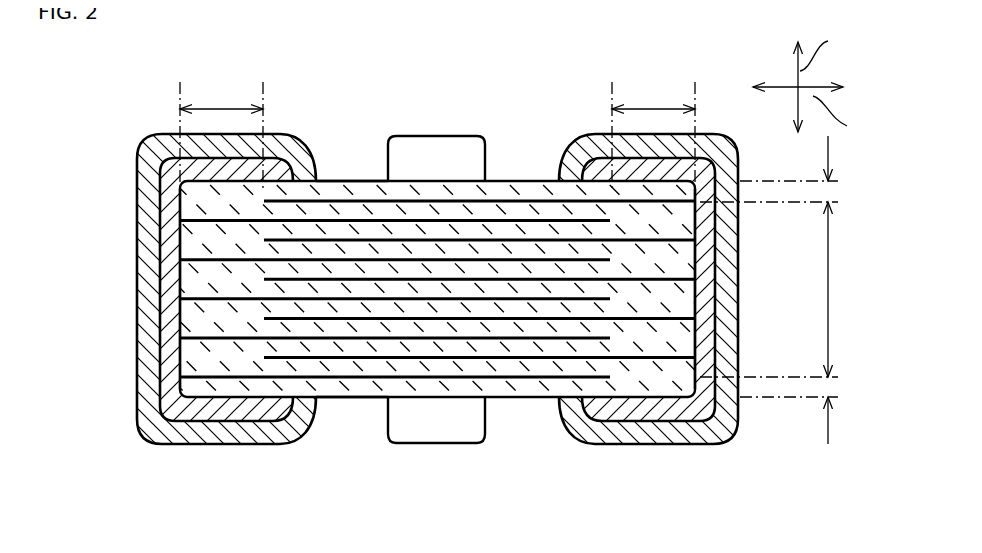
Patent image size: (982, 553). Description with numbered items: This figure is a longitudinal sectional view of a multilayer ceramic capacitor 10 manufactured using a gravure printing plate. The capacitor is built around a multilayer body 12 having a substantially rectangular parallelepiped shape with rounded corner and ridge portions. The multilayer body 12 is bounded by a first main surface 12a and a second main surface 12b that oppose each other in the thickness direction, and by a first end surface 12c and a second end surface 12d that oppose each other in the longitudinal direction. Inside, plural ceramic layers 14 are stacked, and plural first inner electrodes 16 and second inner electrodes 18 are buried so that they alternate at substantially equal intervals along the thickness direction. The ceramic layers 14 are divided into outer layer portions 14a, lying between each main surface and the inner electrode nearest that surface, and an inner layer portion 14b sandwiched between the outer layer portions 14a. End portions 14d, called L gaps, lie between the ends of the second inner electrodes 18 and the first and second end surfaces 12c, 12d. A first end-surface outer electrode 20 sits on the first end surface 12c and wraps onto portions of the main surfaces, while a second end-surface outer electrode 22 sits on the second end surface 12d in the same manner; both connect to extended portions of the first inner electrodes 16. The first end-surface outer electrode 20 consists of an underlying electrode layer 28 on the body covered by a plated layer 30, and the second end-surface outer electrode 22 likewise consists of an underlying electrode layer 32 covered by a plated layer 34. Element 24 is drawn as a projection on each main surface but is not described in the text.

The multilayer ceramic capacitor 10 is at (120, 110).
The multilayer body 12 is at (506, 181).
The first main surface 12a is at (380, 182).
The second main surface 12b is at (368, 400).
The first end surface 12c is at (177, 362).
The second end surface 12d is at (700, 355).
The ceramic layers 14 is at (367, 233).
The outer layer portions 14a is at (795, 290).
The inner layer portion 14b is at (859, 289).
The end portions 14d is at (437, 131).
The first inner electrodes 16 is at (353, 302).
The second inner electrodes 18 is at (557, 362).
The first end-surface outer electrode 20 is at (137, 247).
The second end-surface outer electrode 22 is at (739, 247).
The protruding portion 24 is at (430, 156).
The underlying electrode layer 28 is at (172, 327).
The plated layer 30 is at (150, 280).
The underlying electrode layer 32 is at (703, 327).
The plated layer 34 is at (728, 280).